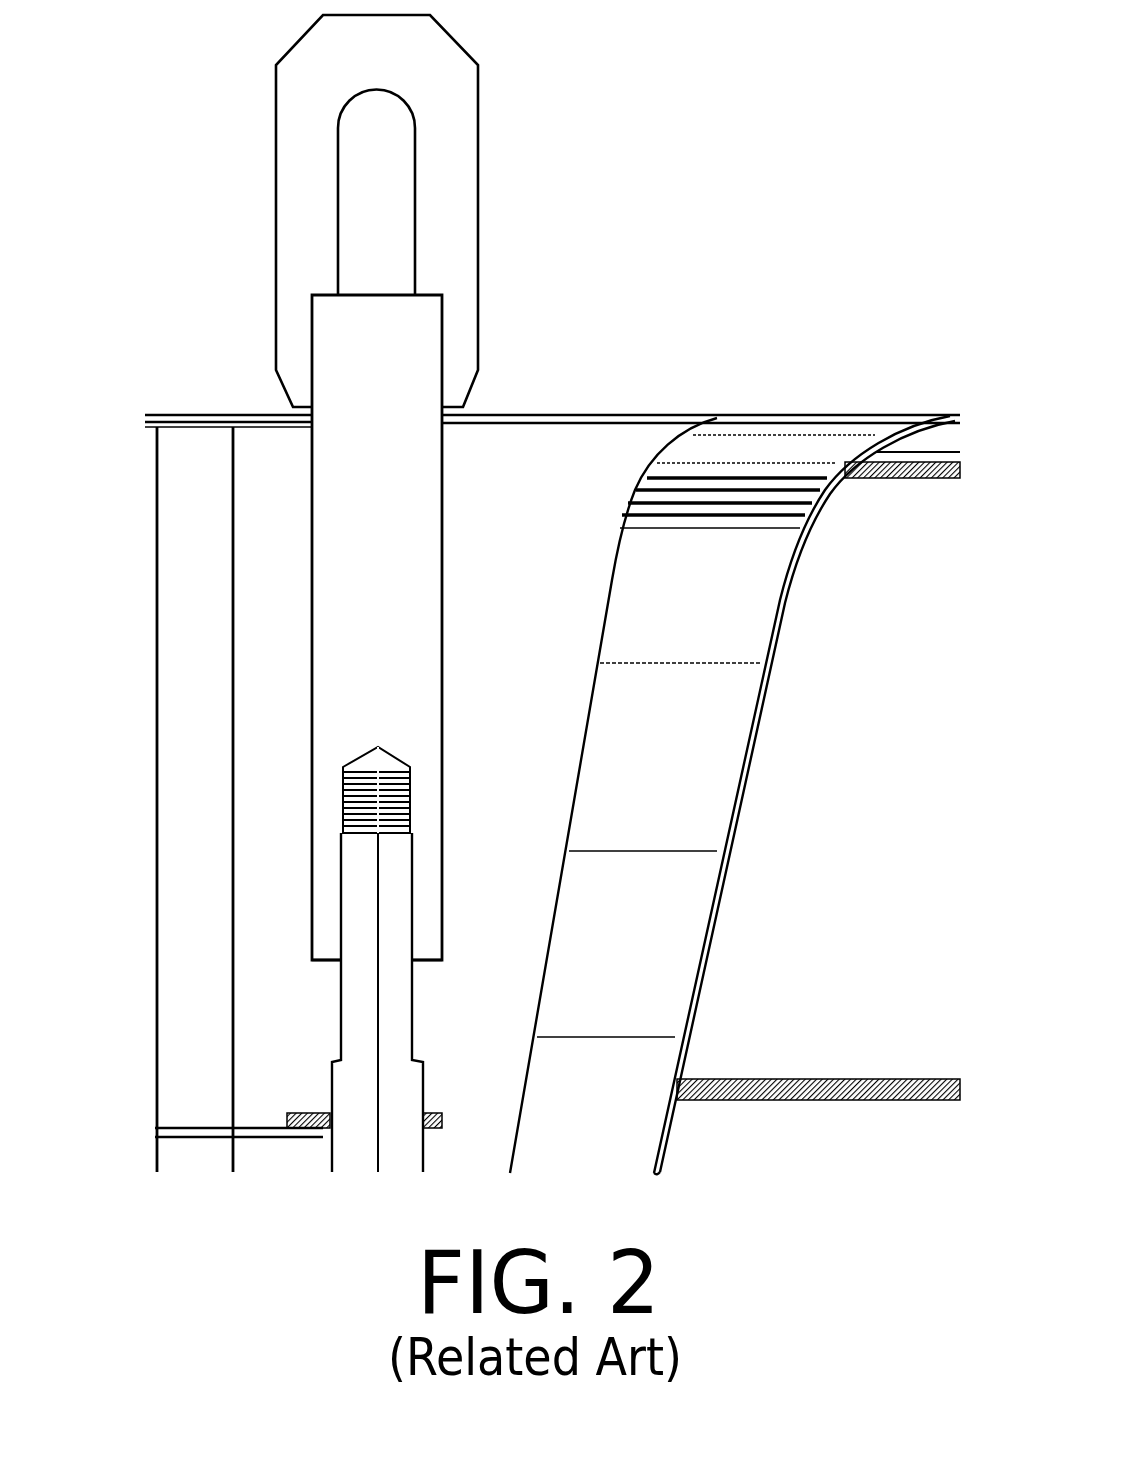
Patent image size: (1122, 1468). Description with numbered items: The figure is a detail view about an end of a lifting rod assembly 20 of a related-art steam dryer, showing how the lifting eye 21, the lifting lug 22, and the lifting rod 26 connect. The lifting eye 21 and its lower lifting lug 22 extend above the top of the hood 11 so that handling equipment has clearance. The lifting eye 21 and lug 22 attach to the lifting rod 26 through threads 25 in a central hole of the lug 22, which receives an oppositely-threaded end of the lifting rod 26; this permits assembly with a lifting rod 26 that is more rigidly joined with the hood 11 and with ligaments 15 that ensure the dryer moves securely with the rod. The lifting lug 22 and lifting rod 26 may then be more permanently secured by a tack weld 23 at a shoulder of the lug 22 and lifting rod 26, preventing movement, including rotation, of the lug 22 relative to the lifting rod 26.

The hood 11 is at (170, 412).
The ligament 15 is at (260, 1133).
The lifting rod assembly 20 is at (500, 118).
The lifting eye 21 is at (465, 268).
The lifting lug 22 is at (343, 535).
The tack weld 23 is at (340, 960).
The threads 25 is at (343, 790).
The lifting rod 26 is at (347, 1015).